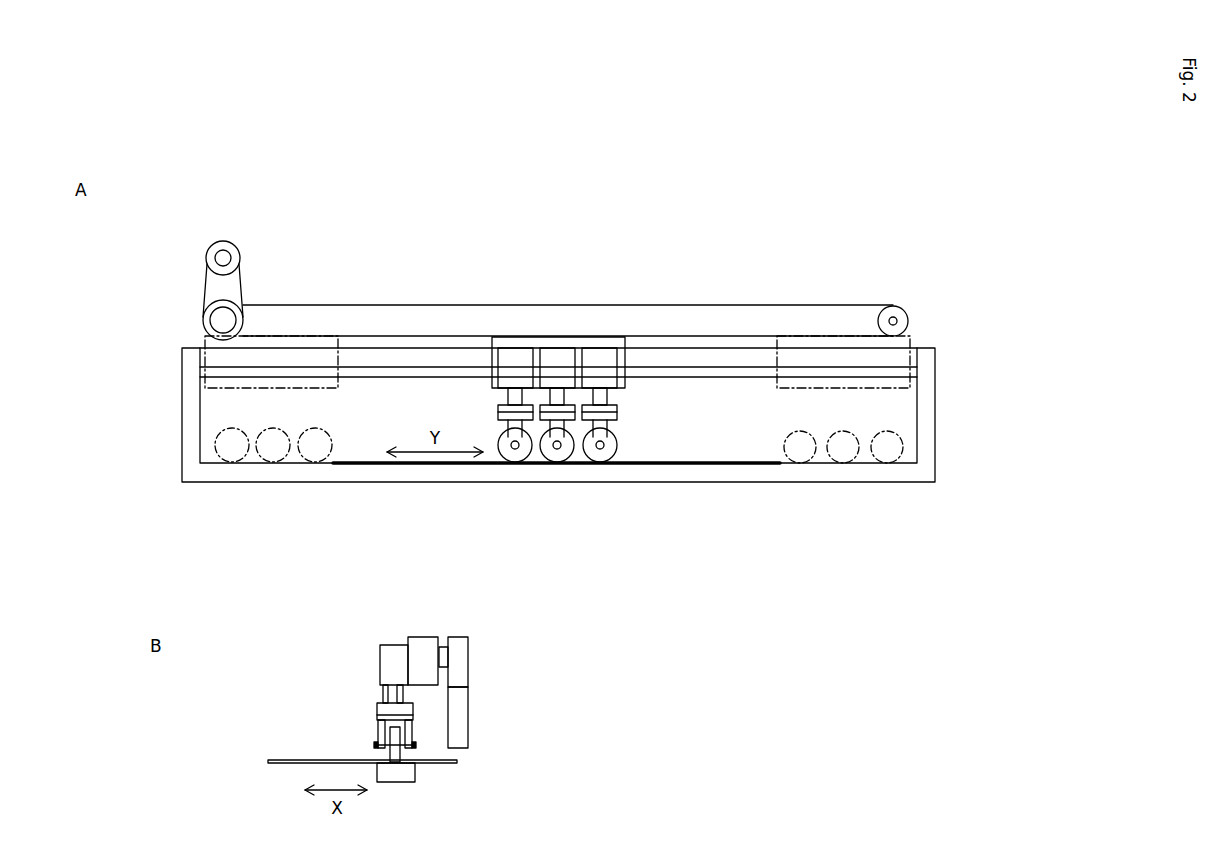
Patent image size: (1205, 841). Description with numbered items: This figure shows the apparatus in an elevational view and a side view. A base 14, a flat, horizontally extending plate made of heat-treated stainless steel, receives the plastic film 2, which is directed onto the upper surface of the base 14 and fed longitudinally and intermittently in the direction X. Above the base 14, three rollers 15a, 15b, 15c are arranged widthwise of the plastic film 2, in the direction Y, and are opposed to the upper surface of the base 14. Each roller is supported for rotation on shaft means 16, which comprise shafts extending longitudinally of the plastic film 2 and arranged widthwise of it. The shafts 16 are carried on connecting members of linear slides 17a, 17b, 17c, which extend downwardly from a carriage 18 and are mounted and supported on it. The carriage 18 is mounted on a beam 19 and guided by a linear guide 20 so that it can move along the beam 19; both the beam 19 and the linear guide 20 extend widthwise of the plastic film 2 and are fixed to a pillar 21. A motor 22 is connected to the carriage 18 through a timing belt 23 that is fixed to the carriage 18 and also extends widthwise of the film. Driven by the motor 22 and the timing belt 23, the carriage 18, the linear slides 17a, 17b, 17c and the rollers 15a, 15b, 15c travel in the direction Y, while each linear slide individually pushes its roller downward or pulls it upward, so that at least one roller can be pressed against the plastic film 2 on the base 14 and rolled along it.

The plastic film 2 is at (742, 461).
The base 14 is at (703, 476).
The roller 15a is at (505, 462).
The roller 15b is at (558, 462).
The roller 15c is at (608, 461).
The shaft means 16 is at (608, 443).
The linear slide 17a is at (512, 355).
The linear slide 17b is at (556, 355).
The linear slide 17c is at (598, 355).
The carriage 18 is at (628, 356).
The beam 19 is at (665, 373).
The linear guide 20 is at (830, 355).
The pillar 21 is at (186, 412).
The motor 22 is at (238, 252).
The timing belt 23 is at (377, 300).